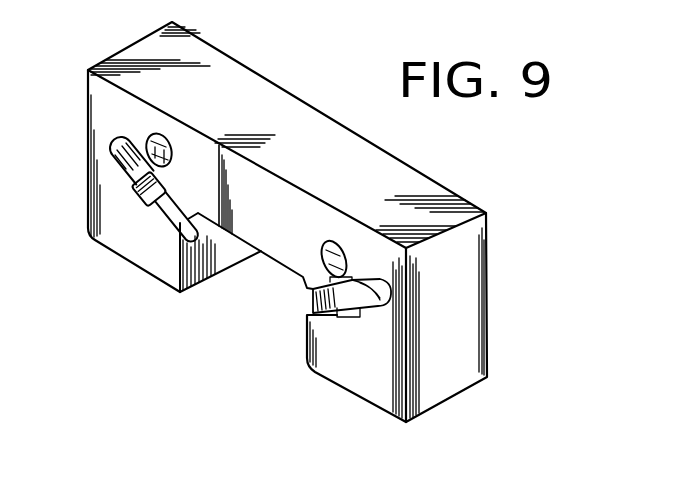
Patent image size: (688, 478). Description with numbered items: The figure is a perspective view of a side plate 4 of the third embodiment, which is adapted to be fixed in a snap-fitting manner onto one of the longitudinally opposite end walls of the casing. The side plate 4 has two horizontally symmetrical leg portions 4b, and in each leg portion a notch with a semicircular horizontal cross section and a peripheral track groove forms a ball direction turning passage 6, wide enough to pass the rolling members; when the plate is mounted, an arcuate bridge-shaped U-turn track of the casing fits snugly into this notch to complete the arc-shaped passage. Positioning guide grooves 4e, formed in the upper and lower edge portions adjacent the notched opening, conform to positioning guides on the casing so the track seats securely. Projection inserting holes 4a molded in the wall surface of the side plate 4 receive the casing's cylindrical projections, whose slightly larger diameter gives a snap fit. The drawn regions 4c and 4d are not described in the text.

The side plate 4 is at (310, 160).
The projection inserting hole 4a is at (326, 243).
The leg portion 4b is at (88, 201).
The recess 4c is at (273, 294).
The lower projection of clamping block 4d is at (333, 372).
The positioning guide groove 4e is at (142, 193).
The ball direction turning passage 6 is at (112, 140).